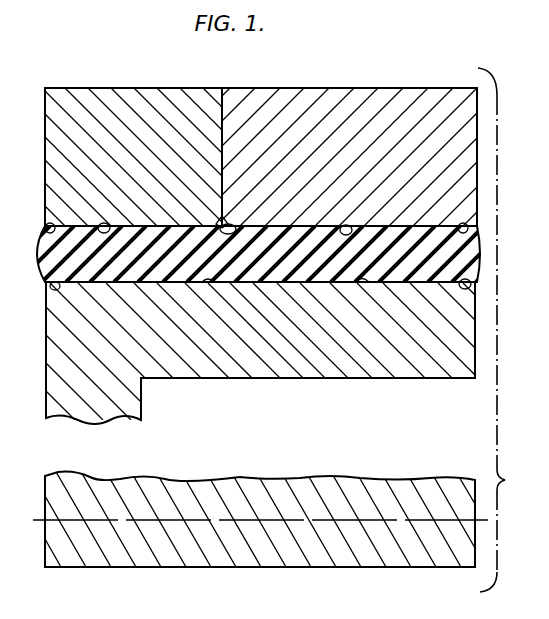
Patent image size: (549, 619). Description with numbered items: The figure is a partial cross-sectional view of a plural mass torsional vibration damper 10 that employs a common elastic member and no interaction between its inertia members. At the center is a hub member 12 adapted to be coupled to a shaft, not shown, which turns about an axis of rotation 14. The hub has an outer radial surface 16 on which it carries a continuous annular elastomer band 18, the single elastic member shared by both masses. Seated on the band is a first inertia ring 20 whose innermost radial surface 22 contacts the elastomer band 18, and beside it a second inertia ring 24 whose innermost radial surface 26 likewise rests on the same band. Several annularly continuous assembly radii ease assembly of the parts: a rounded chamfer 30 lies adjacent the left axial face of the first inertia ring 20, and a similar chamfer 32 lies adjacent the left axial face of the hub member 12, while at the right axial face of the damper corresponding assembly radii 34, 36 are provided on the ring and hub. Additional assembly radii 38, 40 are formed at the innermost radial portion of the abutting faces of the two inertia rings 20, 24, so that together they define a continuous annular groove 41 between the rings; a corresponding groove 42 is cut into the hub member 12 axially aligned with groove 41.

The torsional vibration damper 10 is at (412, 78).
The hub member 12 is at (292, 348).
The axis of rotation 14 is at (305, 522).
The outer radial surface 16 is at (352, 286).
The elastomer band 18 is at (102, 265).
The first inertia ring 20 is at (95, 134).
The innermost radial surface 22 is at (108, 225).
The second inertia ring 24 is at (364, 174).
The innermost radial surface 26 is at (352, 226).
The rounded chamfer 30 is at (50, 222).
The chamfer 32 is at (58, 286).
The assembly radius 34 is at (462, 222).
The assembly radius 36 is at (457, 286).
The assembly radius 38 is at (213, 220).
The assembly radius 40 is at (246, 222).
The continuous annular groove 41 is at (231, 220).
The groove 42 is at (208, 290).